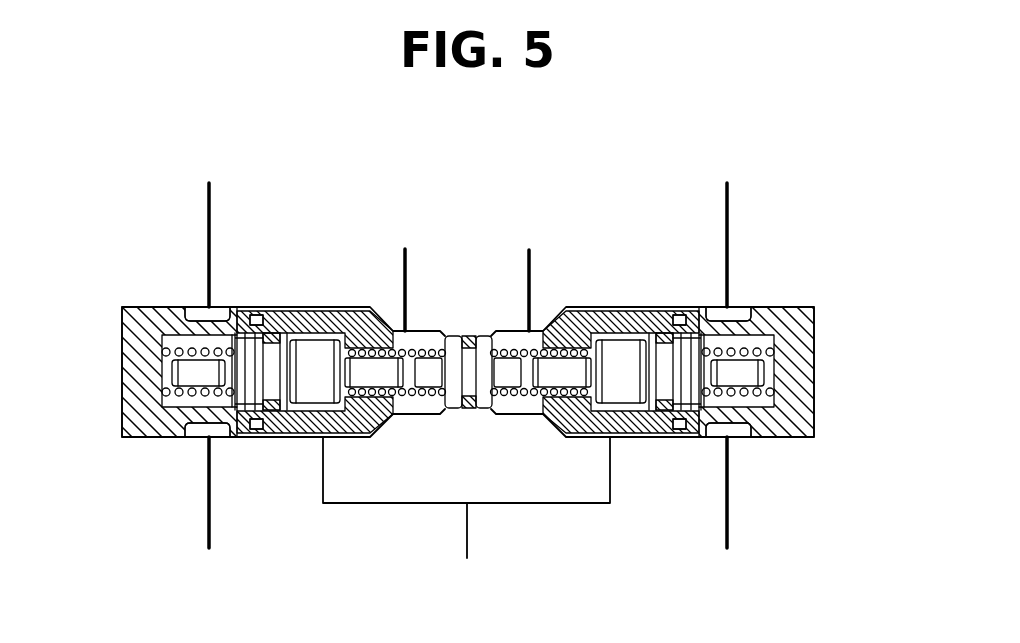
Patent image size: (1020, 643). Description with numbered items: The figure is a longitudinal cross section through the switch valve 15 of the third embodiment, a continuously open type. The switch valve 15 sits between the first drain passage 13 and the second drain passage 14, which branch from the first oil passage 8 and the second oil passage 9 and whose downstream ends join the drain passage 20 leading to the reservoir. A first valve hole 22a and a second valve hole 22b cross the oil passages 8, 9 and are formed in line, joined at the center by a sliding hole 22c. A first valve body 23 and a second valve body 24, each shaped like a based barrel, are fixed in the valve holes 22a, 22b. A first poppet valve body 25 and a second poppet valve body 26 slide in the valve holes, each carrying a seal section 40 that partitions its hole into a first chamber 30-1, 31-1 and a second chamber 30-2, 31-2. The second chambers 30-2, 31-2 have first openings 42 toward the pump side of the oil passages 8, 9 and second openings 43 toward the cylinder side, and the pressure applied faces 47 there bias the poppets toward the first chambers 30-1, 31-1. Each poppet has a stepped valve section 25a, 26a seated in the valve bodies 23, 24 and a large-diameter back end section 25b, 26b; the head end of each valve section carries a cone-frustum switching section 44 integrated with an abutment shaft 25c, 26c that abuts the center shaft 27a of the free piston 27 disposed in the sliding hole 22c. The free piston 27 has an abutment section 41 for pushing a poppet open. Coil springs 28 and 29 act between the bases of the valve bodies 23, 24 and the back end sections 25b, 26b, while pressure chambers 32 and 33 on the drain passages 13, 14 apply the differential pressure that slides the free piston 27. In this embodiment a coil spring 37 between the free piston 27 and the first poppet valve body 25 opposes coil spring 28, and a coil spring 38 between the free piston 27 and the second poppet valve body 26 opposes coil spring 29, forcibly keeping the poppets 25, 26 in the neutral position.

The first oil passage 8 is at (730, 222).
The second oil passage 9 is at (208, 214).
The first drain passage 13 is at (529, 250).
The second drain passage 14 is at (404, 250).
The switch valve 15 is at (118, 375).
The drain passage 20 is at (467, 532).
The first valve hole 22a is at (791, 311).
The second valve hole 22b is at (140, 312).
The sliding hole 22c is at (491, 437).
The first valve body 23 is at (815, 398).
The second valve body 24 is at (128, 393).
The first poppet valve body 25 is at (641, 437).
The valve section 25a is at (614, 437).
The back end section 25b is at (692, 437).
The abutment shaft 25c is at (541, 437).
The second poppet valve body 26 is at (294, 437).
The valve section 26a is at (318, 437).
The back end section 26b is at (244, 437).
The abutment shaft 26c is at (385, 437).
The free piston 27 is at (449, 437).
The center shaft 27a is at (427, 331).
The coil spring 28 is at (795, 338).
The coil spring 29 is at (161, 339).
The first chamber 30-1 is at (631, 311).
The second chamber 30-2 is at (785, 437).
The first chamber 31-1 is at (318, 306).
The second chamber 31-2 is at (150, 437).
The pressure chamber 32 is at (543, 331).
The pressure chamber 33 is at (374, 306).
The coil spring 37 is at (505, 331).
The coil spring 38 is at (455, 336).
The seal section 40 is at (262, 311).
The abutment section 41 is at (582, 331).
The first opening 42 is at (189, 306).
The second opening 43 is at (205, 438).
The switching section 44 is at (338, 438).
The pressure applied face 47 is at (218, 438).